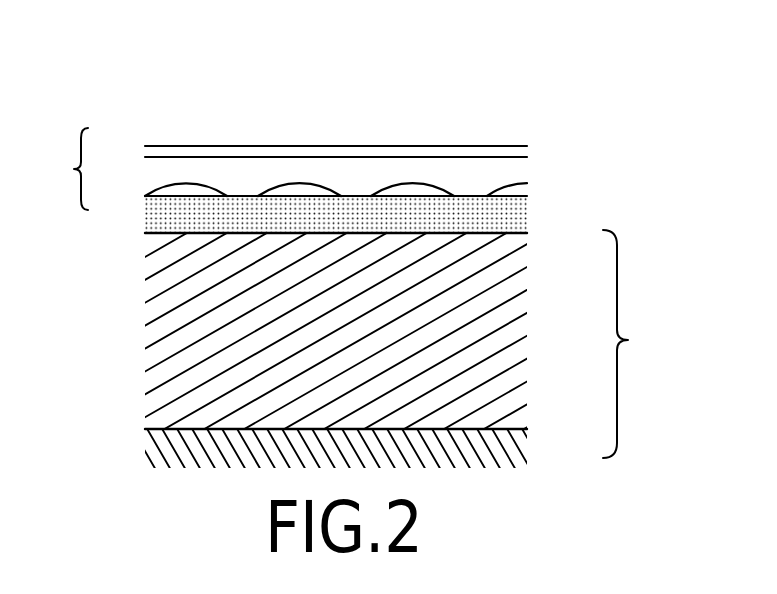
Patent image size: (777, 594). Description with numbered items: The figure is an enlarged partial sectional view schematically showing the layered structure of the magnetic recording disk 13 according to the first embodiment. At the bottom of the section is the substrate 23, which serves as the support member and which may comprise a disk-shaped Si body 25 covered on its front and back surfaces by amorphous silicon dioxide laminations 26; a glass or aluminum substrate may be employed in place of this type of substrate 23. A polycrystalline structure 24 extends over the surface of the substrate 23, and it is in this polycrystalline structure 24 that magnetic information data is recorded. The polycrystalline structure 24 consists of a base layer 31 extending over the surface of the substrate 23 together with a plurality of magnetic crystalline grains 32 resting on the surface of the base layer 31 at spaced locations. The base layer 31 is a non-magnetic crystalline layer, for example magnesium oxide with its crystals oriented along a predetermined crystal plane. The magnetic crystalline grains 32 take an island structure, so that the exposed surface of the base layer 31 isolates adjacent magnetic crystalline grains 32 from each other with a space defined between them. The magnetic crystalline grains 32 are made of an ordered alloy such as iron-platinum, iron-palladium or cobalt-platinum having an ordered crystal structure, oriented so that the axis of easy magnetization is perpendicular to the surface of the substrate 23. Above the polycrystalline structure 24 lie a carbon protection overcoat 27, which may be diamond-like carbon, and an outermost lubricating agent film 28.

The magnetic recording disk 13 is at (451, 79).
The substrate 23 is at (645, 344).
The polycrystalline structure 24 is at (56, 169).
The Si body 25 is at (503, 429).
The amorphous SiO2 lamination 26 is at (503, 233).
The carbon protection overcoat 27 is at (517, 158).
The lubricating agent film 28 is at (520, 145).
The base layer 31 is at (163, 196).
The magnetic crystalline grains 32 is at (178, 183).